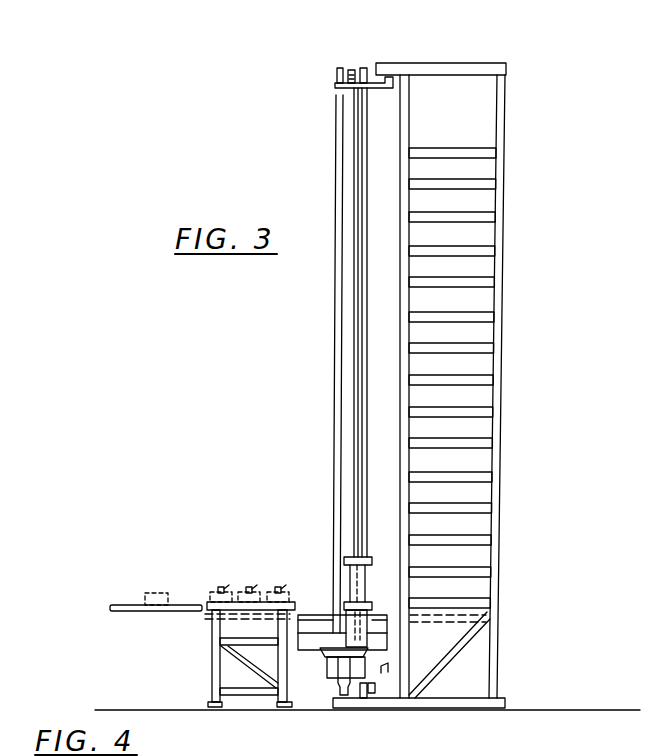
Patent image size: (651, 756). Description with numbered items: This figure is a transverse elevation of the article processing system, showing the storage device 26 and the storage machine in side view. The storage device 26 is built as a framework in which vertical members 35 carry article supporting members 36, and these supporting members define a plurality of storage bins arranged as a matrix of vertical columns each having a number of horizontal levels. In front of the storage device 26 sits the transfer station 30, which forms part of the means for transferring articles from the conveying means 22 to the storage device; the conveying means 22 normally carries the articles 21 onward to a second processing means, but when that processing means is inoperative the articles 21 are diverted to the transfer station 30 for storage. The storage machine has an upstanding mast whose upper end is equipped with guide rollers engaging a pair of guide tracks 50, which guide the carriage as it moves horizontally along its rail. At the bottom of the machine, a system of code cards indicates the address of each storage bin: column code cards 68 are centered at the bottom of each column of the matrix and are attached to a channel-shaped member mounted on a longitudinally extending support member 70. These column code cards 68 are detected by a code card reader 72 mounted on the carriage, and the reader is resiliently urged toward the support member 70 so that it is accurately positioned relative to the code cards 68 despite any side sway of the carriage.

The articles 21 is at (157, 593).
The conveying means 22 is at (108, 610).
The storage device 26 is at (448, 385).
The transfer station 30 is at (210, 650).
The vertical members 35 is at (505, 137).
The article supporting members 36 is at (452, 149).
The guide tracks 50 is at (364, 66).
The column code cards 68 is at (371, 702).
The support member 70 is at (380, 690).
The code card reader 72 is at (362, 702).